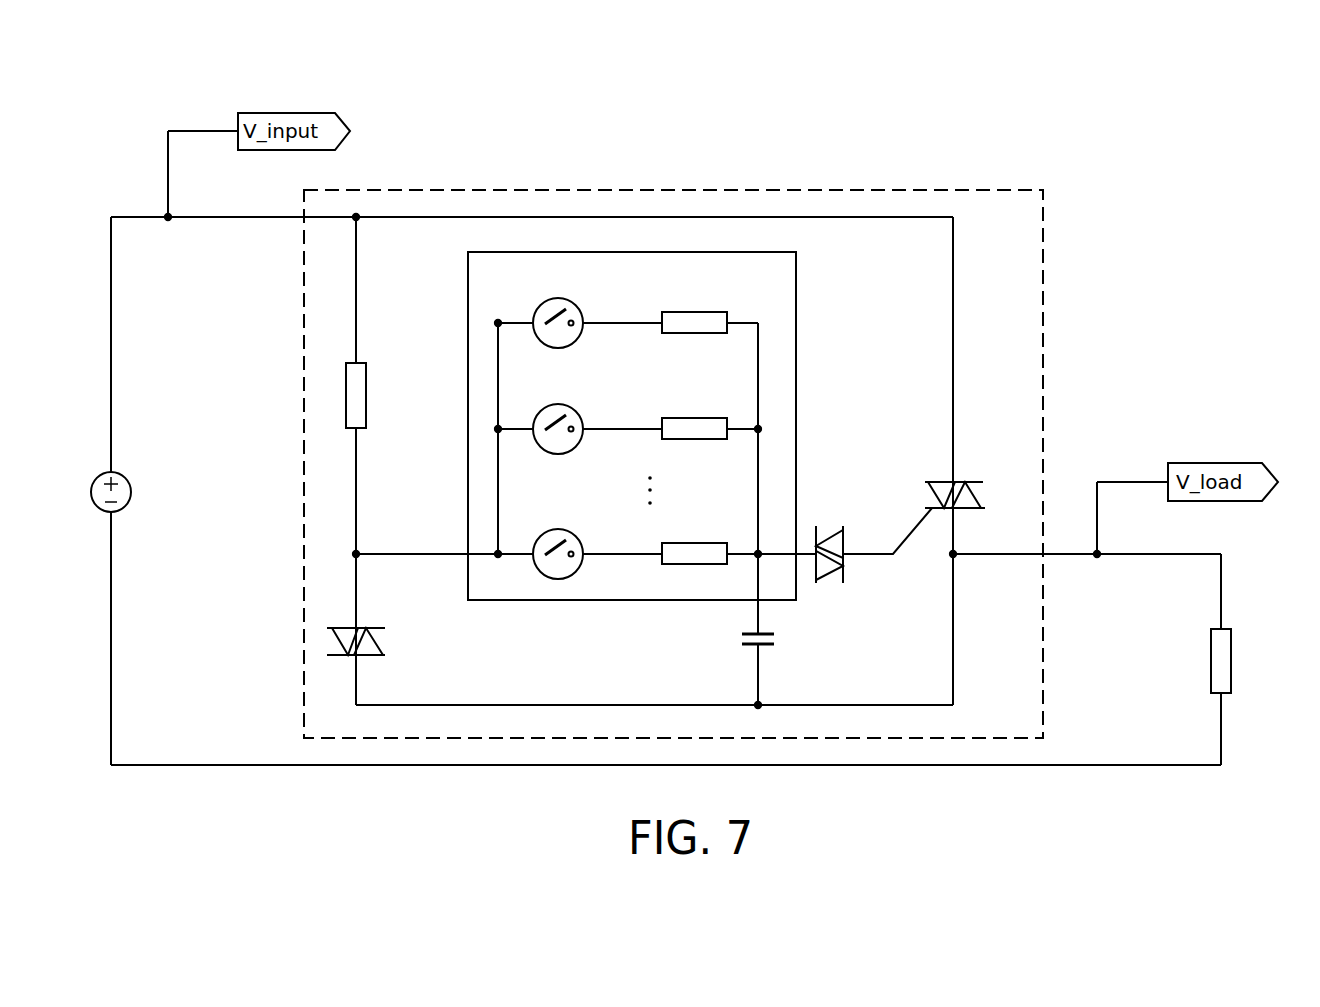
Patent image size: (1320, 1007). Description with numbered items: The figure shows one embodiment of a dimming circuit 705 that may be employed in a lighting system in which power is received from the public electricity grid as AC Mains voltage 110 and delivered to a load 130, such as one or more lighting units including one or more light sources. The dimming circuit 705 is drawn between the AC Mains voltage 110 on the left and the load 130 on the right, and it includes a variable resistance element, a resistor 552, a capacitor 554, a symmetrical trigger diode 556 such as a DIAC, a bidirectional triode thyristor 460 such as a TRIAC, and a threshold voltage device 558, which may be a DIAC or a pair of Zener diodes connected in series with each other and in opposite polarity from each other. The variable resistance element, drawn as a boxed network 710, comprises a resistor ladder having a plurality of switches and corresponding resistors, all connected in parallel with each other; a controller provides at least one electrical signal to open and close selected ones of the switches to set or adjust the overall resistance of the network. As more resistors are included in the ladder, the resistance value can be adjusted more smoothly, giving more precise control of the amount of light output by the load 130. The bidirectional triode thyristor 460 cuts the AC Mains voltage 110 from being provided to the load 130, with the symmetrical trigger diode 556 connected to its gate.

The AC Mains voltage 110 is at (132, 492).
The load 130 is at (1195, 636).
The bidirectional triode thyristor 460 is at (912, 470).
The resistor 552 is at (366, 393).
The capacitor 554 is at (775, 640).
The symmetrical trigger diode 556 is at (830, 526).
The threshold voltage device 558 is at (376, 638).
The dimming circuit 705 is at (1043, 225).
The selectable resistance network 710 is at (796, 280).